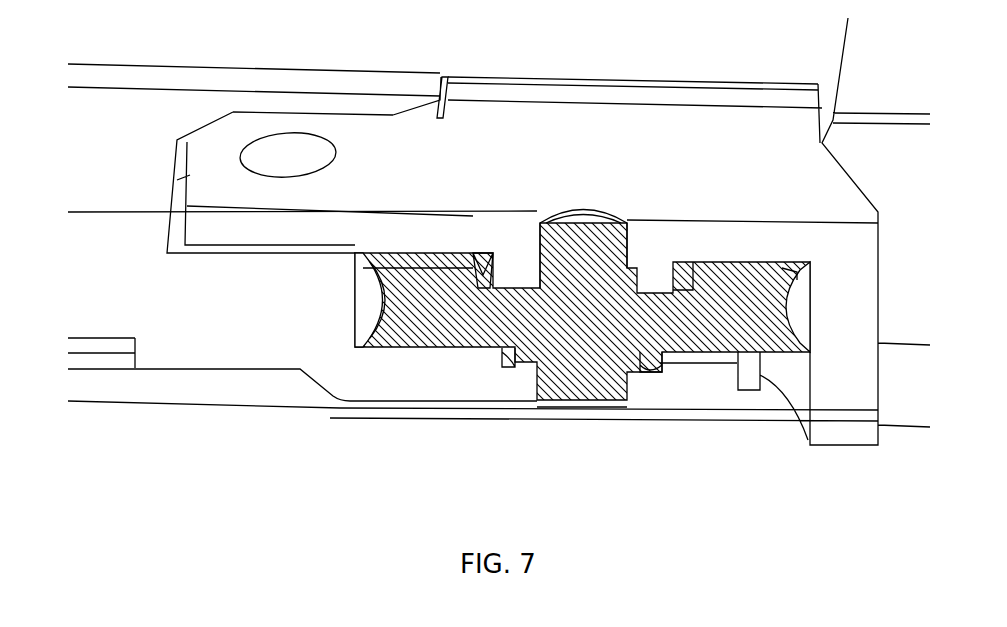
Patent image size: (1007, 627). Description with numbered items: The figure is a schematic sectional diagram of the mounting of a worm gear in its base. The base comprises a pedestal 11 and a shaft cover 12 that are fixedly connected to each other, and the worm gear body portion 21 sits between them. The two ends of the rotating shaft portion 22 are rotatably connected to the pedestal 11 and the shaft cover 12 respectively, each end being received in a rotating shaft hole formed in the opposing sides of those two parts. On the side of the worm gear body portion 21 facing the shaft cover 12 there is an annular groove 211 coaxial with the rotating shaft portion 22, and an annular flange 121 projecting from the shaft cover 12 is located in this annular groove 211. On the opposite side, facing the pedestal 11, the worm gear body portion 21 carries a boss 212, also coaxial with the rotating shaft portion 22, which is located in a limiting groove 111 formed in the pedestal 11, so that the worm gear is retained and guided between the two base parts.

The pedestal 11 is at (478, 375).
The limiting groove 111 is at (507, 363).
The shaft cover 12 is at (502, 160).
The annular flange 121 is at (515, 278).
The worm gear body portion 21 is at (685, 320).
The annular groove 211 is at (490, 282).
The boss 212 is at (642, 362).
The rotating shaft portion 22 is at (592, 263).